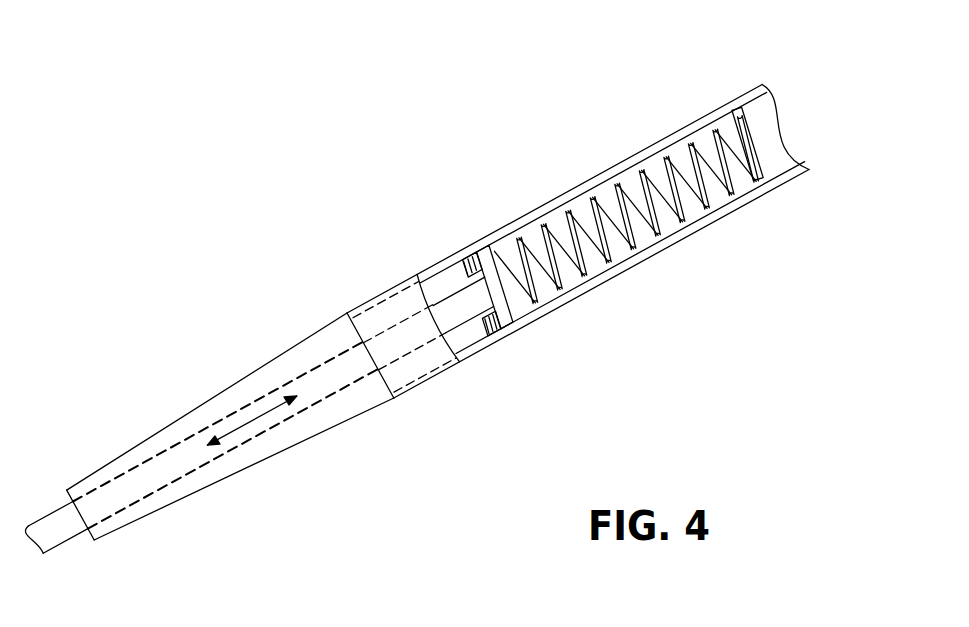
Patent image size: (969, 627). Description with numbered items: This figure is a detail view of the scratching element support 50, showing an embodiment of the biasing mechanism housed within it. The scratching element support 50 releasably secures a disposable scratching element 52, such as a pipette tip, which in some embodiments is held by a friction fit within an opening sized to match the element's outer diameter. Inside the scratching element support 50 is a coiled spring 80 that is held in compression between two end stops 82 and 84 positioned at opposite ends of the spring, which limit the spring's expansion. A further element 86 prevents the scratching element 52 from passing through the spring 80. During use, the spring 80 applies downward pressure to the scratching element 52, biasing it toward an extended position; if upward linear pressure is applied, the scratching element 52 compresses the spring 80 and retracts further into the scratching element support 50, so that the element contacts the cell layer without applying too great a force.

The scratching element support 50 is at (211, 221).
The scratching element 52 is at (47, 521).
The coiled spring 80 is at (665, 233).
The end stop 82 is at (466, 264).
The end stop 84 is at (772, 176).
The element 86 is at (522, 317).